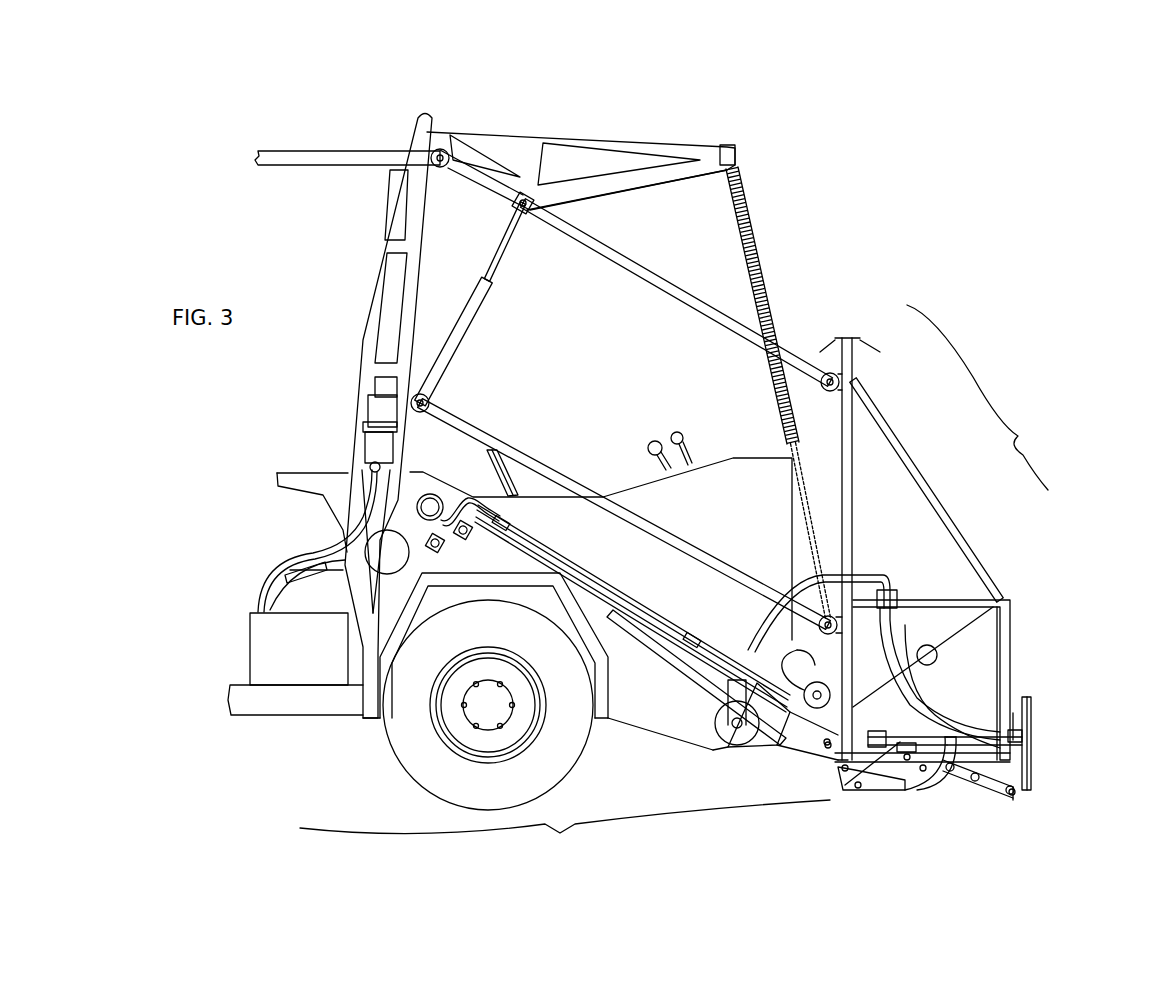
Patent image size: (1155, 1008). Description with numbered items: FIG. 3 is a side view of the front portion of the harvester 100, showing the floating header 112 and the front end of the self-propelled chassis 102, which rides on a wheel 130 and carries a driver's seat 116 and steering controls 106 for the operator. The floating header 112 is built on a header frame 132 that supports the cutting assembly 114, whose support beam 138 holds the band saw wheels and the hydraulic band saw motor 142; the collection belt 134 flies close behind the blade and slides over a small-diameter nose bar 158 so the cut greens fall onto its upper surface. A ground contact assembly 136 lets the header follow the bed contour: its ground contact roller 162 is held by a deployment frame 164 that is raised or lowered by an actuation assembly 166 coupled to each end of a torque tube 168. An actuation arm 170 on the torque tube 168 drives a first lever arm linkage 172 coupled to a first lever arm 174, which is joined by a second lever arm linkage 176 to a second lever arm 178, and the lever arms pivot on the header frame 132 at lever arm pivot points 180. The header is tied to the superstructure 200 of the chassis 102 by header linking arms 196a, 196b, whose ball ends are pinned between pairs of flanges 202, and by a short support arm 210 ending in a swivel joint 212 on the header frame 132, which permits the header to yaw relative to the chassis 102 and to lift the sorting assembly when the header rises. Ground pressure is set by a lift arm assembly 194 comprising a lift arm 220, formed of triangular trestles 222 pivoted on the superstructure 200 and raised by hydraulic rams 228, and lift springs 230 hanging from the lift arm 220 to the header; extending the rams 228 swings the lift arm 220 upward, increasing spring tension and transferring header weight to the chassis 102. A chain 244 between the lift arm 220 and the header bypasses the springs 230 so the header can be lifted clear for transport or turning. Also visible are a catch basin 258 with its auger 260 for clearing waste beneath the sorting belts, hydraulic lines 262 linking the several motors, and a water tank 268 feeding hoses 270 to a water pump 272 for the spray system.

The harvester 100 is at (930, 242).
The chassis 102 is at (565, 831).
The steering controls 106 is at (655, 440).
The floating header 112 is at (986, 397).
The cutting assembly 114 is at (1036, 722).
The driver's seat 116 is at (508, 462).
The wheel 130 is at (467, 792).
The header frame 132 is at (933, 498).
The collection belt 134 is at (977, 784).
The ground contact assembly 136 is at (838, 789).
The support beam 138 is at (1013, 713).
The band saw motor 142 is at (1014, 790).
The nose bar 158 is at (1012, 795).
The ground contact roller 162 is at (856, 793).
The deployment frame 164 is at (865, 796).
The actuation assembly 166 is at (935, 702).
The torque tube 168 is at (976, 578).
The actuation arm 170 is at (932, 680).
The first lever arm linkage 172 is at (884, 748).
The first lever arm 174 is at (868, 736).
The second lever arm linkage 176 is at (911, 793).
The second lever arm 178 is at (918, 792).
The lever arm pivot points 180 is at (947, 760).
The lift arm assembly 194 is at (545, 127).
The header linking arm 196a is at (652, 278).
The header linking arm 196b is at (583, 490).
The superstructure 200 is at (380, 150).
The flanges 202 is at (432, 400).
The support arm 210 is at (845, 765).
The swivel joint 212 is at (824, 745).
The lift arm 220 is at (525, 127).
The trestle 222 is at (590, 145).
The hydraulic rams 228 is at (494, 290).
The lift springs 230 is at (755, 224).
The chain 244 is at (808, 578).
The catch basin 258 is at (690, 690).
The auger 260 is at (725, 732).
The hydraulic lines 262 is at (670, 630).
The water tank 268 is at (302, 612).
The hoses 270 is at (266, 583).
The water pump 272 is at (378, 447).